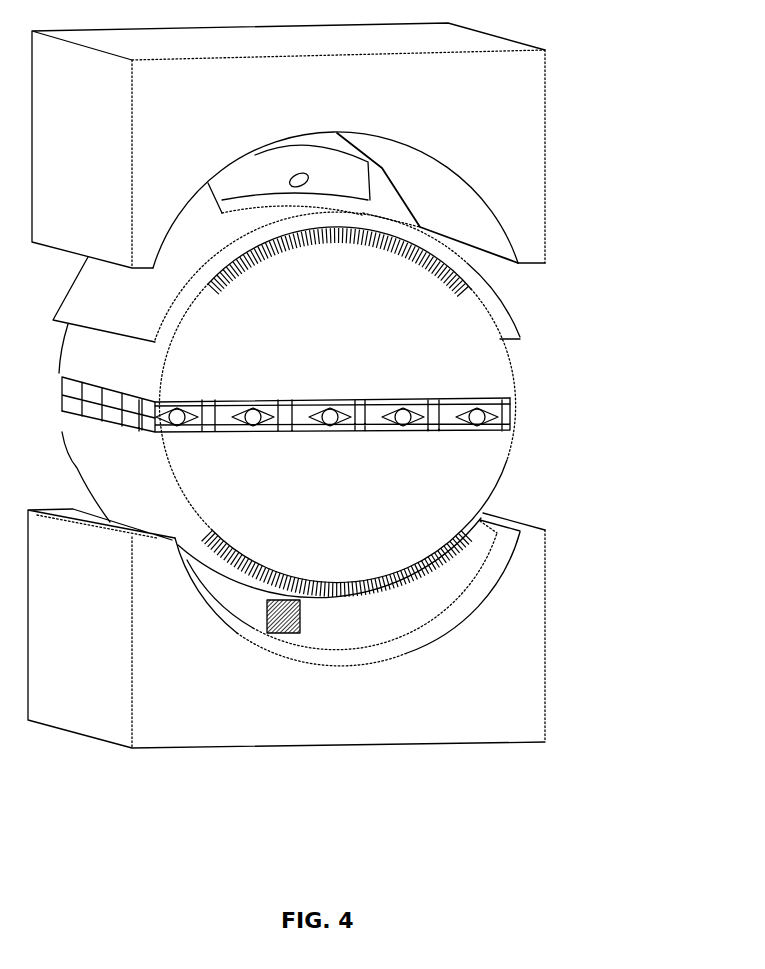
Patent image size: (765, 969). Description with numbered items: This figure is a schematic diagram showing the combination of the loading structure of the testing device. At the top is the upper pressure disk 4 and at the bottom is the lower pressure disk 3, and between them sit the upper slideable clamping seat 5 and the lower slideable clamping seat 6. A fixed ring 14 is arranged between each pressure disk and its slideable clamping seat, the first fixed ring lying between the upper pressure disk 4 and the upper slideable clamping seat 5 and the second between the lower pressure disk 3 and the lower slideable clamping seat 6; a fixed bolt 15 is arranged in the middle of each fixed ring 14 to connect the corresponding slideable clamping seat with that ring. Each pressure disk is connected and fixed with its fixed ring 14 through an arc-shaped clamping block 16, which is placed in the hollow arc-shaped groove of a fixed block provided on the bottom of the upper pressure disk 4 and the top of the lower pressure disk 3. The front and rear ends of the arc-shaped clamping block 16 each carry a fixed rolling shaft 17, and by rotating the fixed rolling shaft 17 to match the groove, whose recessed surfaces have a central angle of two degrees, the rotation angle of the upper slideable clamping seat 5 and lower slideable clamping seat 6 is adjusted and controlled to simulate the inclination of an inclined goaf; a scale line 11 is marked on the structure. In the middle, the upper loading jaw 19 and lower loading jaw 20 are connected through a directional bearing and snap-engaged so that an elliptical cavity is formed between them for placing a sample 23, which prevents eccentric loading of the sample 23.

The lower pressure disk 3 is at (503, 670).
The upper pressure disk 4 is at (507, 92).
The upper slideable clamping seat 5 is at (465, 357).
The lower slideable clamping seat 6 is at (453, 490).
The scale line 11 is at (445, 282).
The fixed ring 14 is at (400, 233).
The fixed bolt 15 is at (302, 615).
The arc-shaped clamping block 16 is at (378, 190).
The fixed rolling shaft 17 is at (312, 176).
The upper loading jaw 19 is at (513, 387).
The lower loading jaw 20 is at (505, 417).
The sample 23 is at (515, 397).